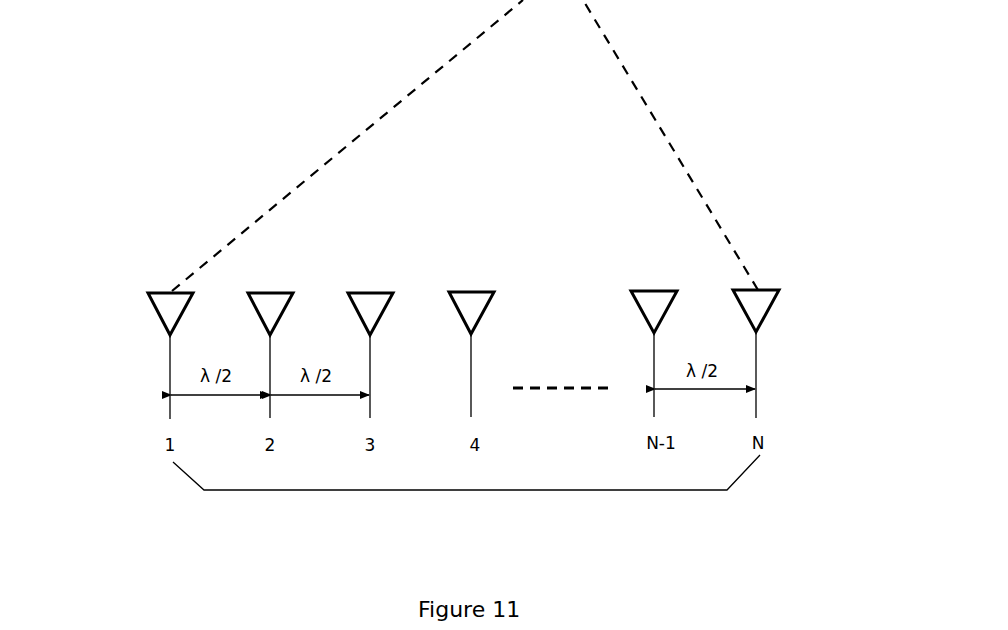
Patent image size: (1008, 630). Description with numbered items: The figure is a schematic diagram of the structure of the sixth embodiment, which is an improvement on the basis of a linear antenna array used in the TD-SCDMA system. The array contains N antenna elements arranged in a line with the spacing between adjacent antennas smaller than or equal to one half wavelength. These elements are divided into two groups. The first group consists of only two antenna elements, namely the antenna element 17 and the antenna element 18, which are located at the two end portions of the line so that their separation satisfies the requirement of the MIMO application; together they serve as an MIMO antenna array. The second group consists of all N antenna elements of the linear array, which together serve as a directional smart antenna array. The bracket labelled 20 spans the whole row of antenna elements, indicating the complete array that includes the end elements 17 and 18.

The antenna element 17 is at (170, 305).
The antenna element 18 is at (757, 305).
The antenna array 20 is at (597, 491).